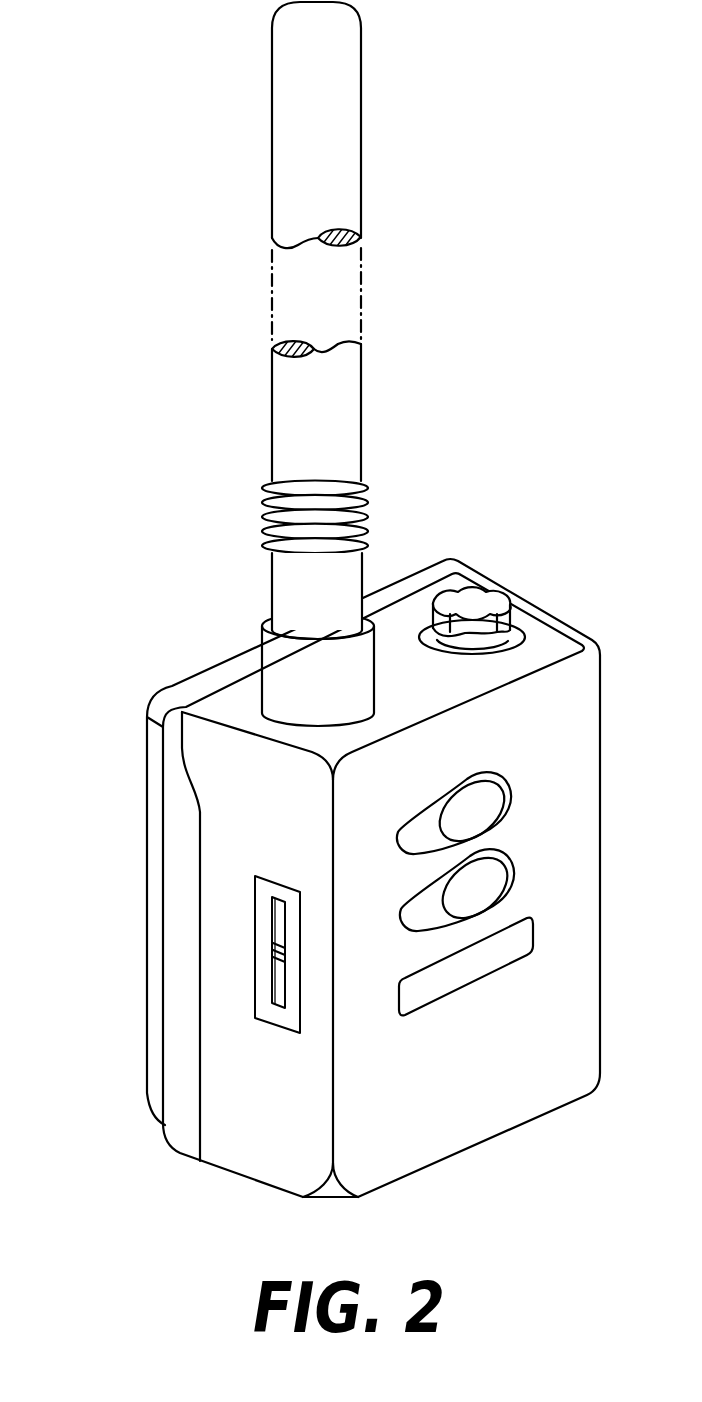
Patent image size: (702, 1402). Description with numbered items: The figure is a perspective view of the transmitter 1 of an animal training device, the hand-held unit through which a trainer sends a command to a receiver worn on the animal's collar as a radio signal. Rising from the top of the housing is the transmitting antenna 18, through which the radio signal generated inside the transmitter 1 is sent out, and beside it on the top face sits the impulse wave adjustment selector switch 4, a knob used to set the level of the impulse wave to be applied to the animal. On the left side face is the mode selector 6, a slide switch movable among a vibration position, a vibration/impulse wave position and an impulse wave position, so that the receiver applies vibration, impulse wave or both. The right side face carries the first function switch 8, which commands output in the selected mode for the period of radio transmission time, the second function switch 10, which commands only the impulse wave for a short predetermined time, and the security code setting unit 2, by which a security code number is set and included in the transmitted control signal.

The transmitter 1 is at (100, 566).
The security code setting unit 2 is at (519, 939).
The impulse wave adjustment selector switch 4 is at (475, 603).
The mode selector 6 is at (273, 947).
The first function switch 8 is at (491, 881).
The second function switch 10 is at (490, 803).
The transmitting antenna 18 is at (348, 392).